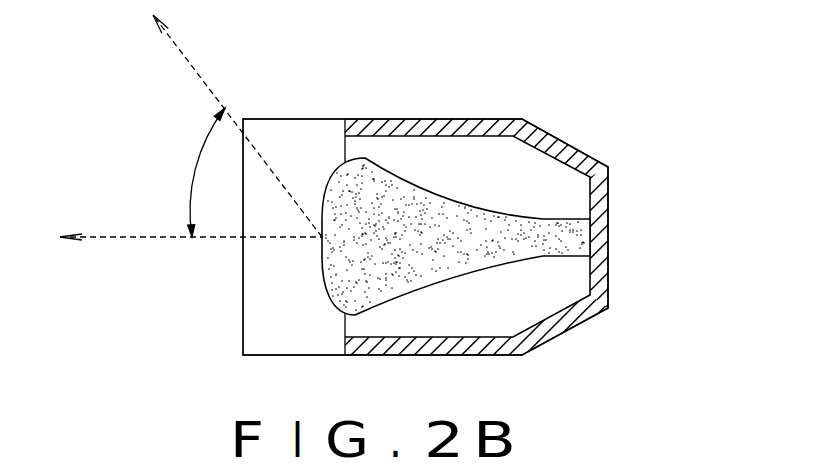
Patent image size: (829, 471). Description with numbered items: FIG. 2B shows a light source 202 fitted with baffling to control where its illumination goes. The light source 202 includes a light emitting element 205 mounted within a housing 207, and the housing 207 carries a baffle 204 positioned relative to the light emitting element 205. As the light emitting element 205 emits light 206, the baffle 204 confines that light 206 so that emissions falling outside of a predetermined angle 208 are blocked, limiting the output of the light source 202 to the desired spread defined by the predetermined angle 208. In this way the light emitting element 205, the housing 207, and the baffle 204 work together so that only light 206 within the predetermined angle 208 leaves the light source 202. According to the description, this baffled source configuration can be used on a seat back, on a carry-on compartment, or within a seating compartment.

The light source 202 is at (508, 100).
The baffle 204 is at (284, 119).
The light emitting element 205 is at (540, 243).
The light 206 is at (170, 39).
The housing 207 is at (558, 139).
The predetermined angle 208 is at (197, 163).